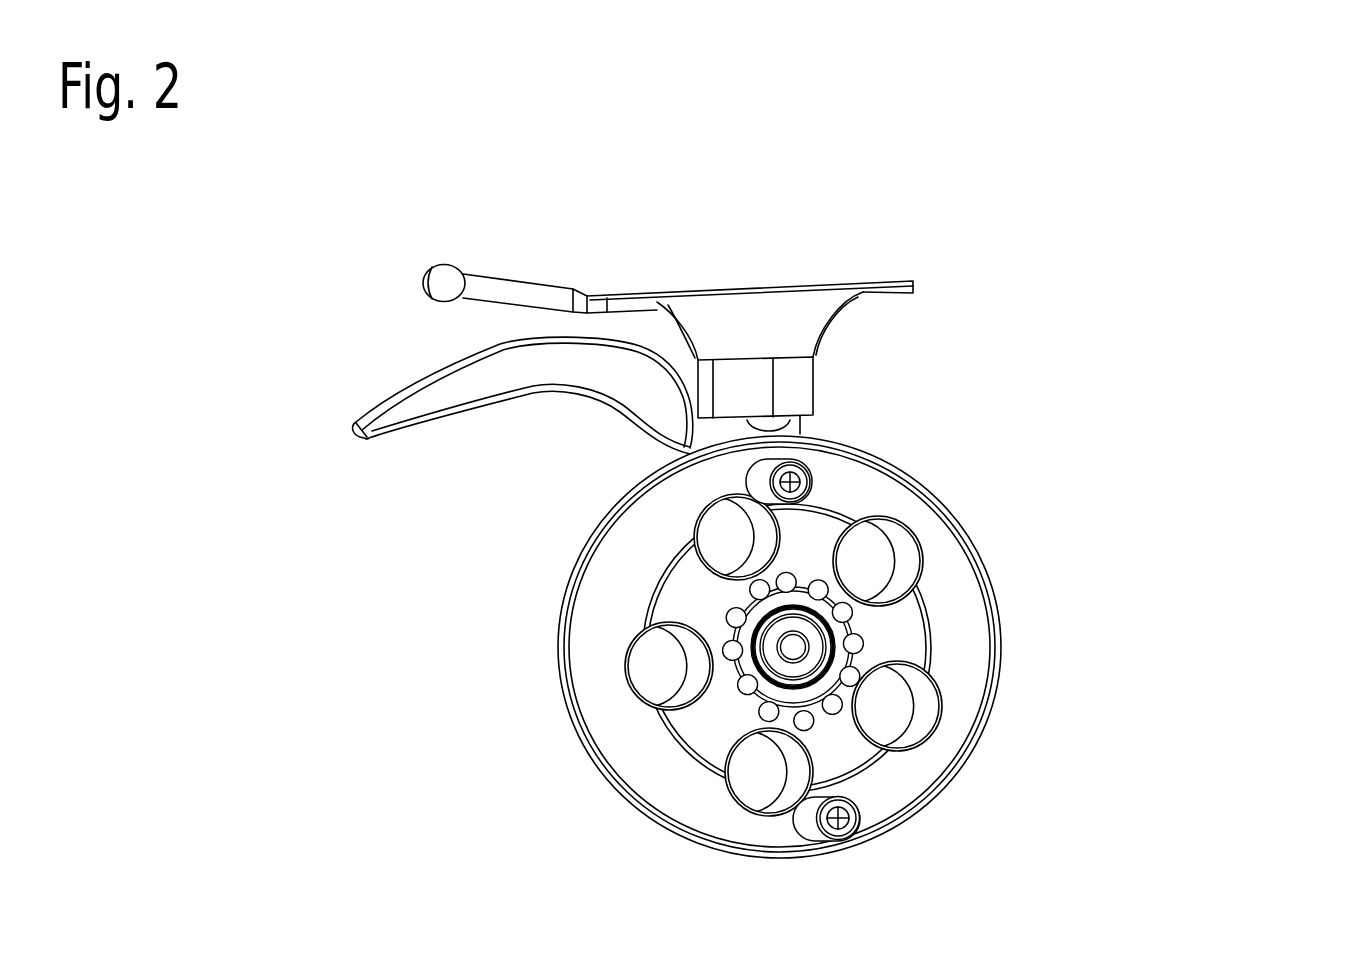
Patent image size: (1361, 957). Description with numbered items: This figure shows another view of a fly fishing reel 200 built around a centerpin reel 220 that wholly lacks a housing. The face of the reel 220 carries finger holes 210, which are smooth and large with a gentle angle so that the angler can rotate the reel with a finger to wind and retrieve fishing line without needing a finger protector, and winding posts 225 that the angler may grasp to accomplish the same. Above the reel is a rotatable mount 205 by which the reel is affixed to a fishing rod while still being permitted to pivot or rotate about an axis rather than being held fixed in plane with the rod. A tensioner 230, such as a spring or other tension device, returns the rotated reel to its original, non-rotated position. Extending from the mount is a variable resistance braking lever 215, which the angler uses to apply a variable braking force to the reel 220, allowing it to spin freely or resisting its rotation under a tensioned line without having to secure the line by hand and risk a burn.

The fly fishing reel 200 is at (1222, 106).
The rotatable mount 205 is at (922, 262).
The finger holes 210 is at (905, 505).
The variable resistance braking lever 215 is at (330, 426).
The centerpin reel 220 is at (535, 630).
The winding posts 225 is at (877, 796).
The tensioner 230 is at (424, 258).